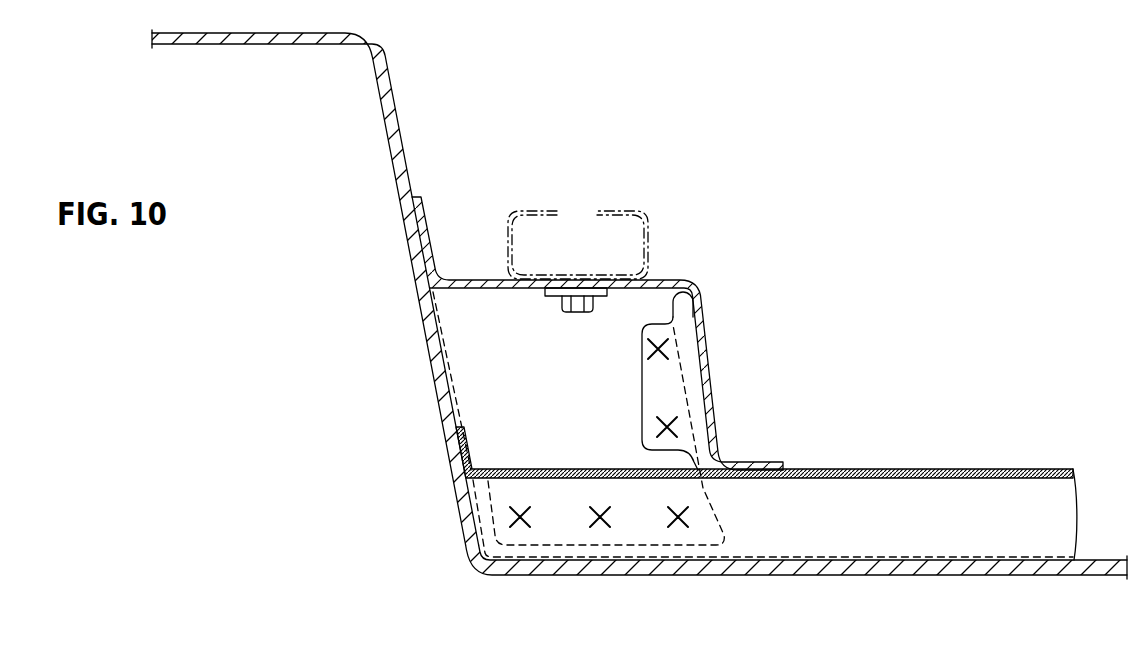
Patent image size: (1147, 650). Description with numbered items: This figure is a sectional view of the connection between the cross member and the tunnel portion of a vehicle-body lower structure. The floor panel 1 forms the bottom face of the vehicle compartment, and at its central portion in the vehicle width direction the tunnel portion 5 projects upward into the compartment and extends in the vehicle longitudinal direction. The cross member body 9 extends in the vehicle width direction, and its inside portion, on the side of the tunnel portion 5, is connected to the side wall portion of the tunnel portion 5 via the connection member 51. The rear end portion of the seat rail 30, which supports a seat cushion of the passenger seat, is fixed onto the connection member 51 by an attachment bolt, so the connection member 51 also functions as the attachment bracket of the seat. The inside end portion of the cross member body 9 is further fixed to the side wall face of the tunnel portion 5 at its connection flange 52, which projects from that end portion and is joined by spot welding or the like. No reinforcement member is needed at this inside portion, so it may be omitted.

The floor panel 1 is at (1100, 562).
The tunnel portion 5 is at (393, 129).
The cross member body 9 is at (912, 468).
The seat rail 30 is at (632, 212).
The connection member 51 is at (705, 279).
The connection flange 52 is at (487, 572).